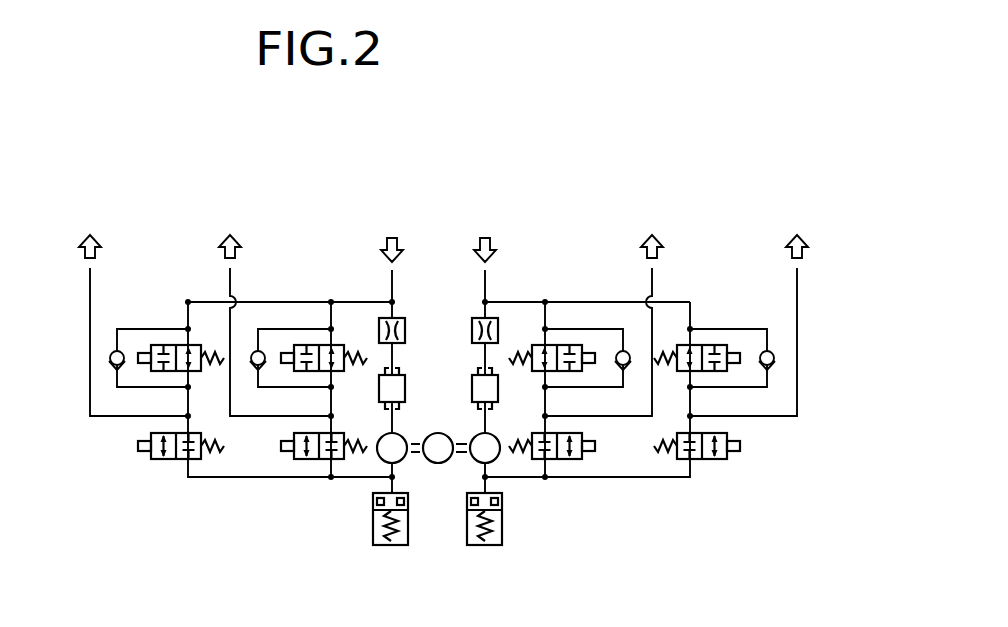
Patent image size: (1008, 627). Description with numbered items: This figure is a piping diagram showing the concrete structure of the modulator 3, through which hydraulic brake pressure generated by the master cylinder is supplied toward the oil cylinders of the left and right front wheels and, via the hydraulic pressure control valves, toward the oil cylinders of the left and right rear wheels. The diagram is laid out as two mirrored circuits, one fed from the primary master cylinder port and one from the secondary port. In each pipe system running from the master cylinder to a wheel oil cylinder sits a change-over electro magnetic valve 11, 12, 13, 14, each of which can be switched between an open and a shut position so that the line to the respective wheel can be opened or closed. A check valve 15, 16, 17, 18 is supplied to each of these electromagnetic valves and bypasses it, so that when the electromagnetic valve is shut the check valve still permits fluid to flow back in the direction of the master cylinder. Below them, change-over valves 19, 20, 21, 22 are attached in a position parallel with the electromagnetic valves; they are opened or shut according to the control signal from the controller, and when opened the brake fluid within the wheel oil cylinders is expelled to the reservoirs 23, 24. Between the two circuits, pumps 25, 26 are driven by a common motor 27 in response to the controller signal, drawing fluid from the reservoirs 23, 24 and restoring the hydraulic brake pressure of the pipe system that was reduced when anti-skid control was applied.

The modulator 3 is at (237, 147).
The change-over electro magnetic valve 11 is at (558, 346).
The change-over electro magnetic valve 12 is at (307, 345).
The change-over electro magnetic valve 13 is at (166, 345).
The change-over electro magnetic valve 14 is at (718, 346).
The check valve 15 is at (620, 352).
The check valve 16 is at (261, 352).
The check valve 17 is at (109, 359).
The check valve 18 is at (769, 352).
The change-over valve 19 is at (568, 460).
The change-over valve 20 is at (310, 459).
The change-over valve 21 is at (165, 459).
The change-over valve 22 is at (708, 464).
The reservoir 23 is at (500, 540).
The reservoir 24 is at (373, 527).
The pump 25 is at (476, 460).
The pump 26 is at (399, 436).
The motor 27 is at (428, 459).